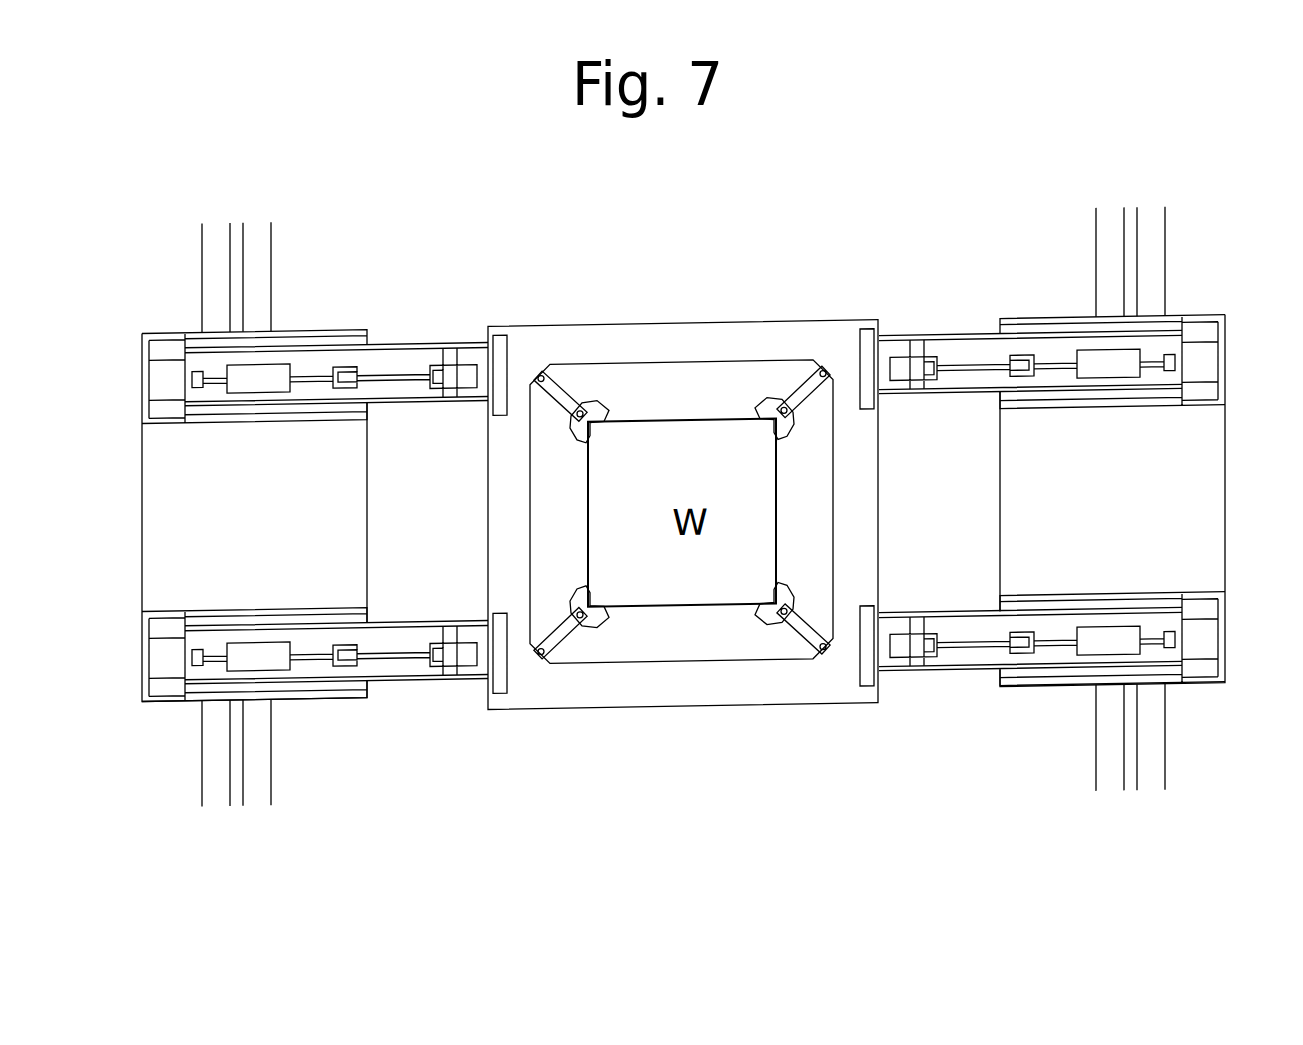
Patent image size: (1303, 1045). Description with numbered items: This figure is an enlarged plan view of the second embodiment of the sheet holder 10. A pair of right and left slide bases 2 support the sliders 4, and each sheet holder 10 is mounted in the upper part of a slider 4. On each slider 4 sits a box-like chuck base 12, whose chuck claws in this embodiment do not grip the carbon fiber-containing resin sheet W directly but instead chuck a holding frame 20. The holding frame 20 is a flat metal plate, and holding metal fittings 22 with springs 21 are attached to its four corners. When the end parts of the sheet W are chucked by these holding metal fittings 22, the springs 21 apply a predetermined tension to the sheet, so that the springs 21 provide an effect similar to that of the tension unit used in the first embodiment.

The slide base 2 is at (258, 269).
The slider 4 is at (348, 513).
The sheet holder 10 is at (420, 345).
The chuck base 12 is at (471, 355).
The holding frame 20 is at (693, 347).
The spring 21 is at (566, 398).
The holding metal fitting 22 is at (603, 412).